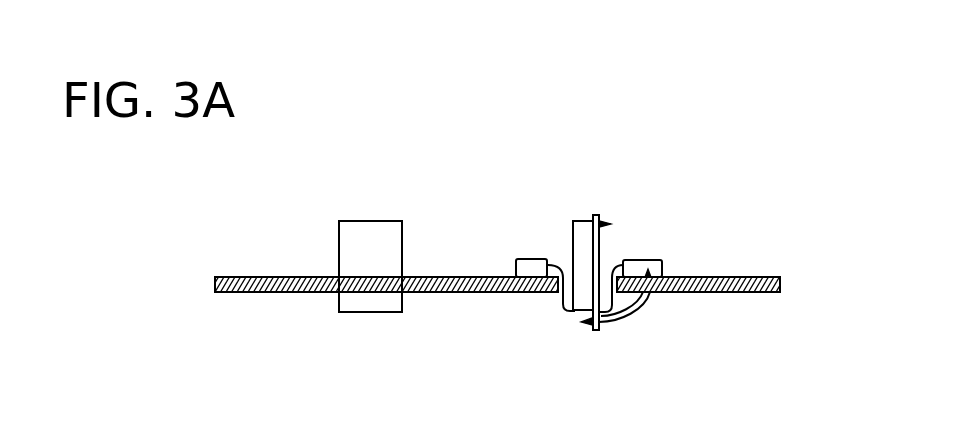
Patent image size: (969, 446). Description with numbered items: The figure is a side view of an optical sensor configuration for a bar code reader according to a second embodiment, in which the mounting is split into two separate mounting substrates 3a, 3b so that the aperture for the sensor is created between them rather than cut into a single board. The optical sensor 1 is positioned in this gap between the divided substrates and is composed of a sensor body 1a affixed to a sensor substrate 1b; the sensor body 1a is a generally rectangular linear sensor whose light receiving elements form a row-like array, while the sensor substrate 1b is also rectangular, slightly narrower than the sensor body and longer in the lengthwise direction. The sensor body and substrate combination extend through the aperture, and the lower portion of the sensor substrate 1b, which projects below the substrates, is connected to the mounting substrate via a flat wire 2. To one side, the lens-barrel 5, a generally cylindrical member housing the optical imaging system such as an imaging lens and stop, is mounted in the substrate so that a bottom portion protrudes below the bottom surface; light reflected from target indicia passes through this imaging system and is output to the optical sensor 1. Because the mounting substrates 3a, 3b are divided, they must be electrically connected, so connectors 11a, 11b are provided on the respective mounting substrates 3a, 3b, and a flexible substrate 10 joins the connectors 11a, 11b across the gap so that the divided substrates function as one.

The optical sensor 1 is at (613, 213).
The sensor body 1a is at (578, 220).
The sensor substrate 1b is at (600, 247).
The flat wire 2 is at (632, 320).
The mounting substrate 3a is at (742, 277).
The mounting substrate 3b is at (243, 277).
The lens-barrel 5 is at (365, 228).
The flexible substrate 10 is at (565, 310).
The connector 11a is at (640, 262).
The connector 11b is at (532, 262).